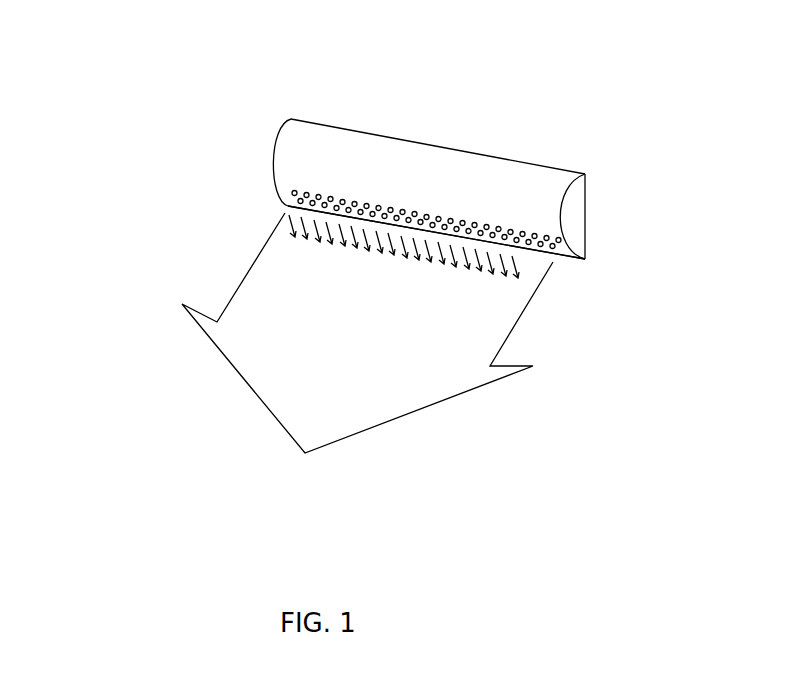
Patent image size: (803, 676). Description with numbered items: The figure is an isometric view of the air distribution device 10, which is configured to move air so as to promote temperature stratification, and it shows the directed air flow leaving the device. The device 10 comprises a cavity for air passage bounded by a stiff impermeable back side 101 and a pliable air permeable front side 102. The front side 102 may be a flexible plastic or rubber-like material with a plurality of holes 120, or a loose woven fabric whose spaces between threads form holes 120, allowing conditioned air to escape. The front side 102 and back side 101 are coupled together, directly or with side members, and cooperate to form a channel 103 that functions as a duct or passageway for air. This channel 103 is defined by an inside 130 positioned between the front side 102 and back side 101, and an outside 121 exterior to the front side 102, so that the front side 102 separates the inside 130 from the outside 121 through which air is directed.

The device 10 is at (138, 97).
The back side 101 is at (589, 199).
The front side 102 is at (276, 157).
The channel 103 is at (578, 210).
The holes 120 is at (556, 254).
The outside 121 is at (240, 212).
The inside 130 is at (595, 241).